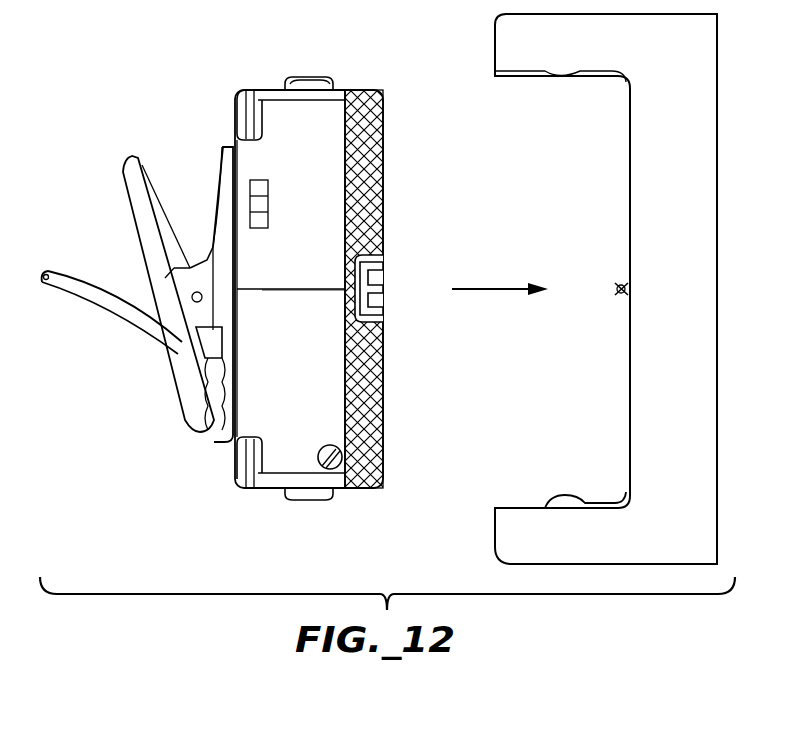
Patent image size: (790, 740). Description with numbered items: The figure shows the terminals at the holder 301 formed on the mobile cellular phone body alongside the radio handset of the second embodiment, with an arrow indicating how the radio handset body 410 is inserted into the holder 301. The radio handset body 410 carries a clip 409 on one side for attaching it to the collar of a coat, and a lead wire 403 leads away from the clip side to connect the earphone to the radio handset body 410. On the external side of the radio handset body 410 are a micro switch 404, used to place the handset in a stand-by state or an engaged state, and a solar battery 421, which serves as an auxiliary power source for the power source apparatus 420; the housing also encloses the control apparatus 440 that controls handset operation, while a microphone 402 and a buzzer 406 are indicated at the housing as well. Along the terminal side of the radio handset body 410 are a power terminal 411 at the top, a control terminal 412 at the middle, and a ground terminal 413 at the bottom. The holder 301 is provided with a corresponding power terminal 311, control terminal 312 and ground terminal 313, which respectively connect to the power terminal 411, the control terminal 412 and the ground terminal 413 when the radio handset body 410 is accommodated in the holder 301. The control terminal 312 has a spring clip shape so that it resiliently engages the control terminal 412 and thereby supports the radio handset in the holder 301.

The radio handset body 410 is at (307, 283).
The microphone 402 is at (237, 98).
The micro switch 404 is at (258, 186).
The power terminal 411 is at (308, 77).
The ground terminal 413 is at (310, 500).
The solar battery 421 is at (383, 148).
The control terminal 412 is at (383, 289).
The control apparatus 440 is at (320, 159).
The power source apparatus 420 is at (320, 359).
The buzzer 406 is at (328, 446).
The clip 409 is at (150, 245).
The lead wire 403 is at (118, 330).
The holder 301 is at (606, 289).
The power terminal 311 is at (560, 76).
The control terminal 312 is at (618, 284).
The ground terminal 313 is at (563, 495).